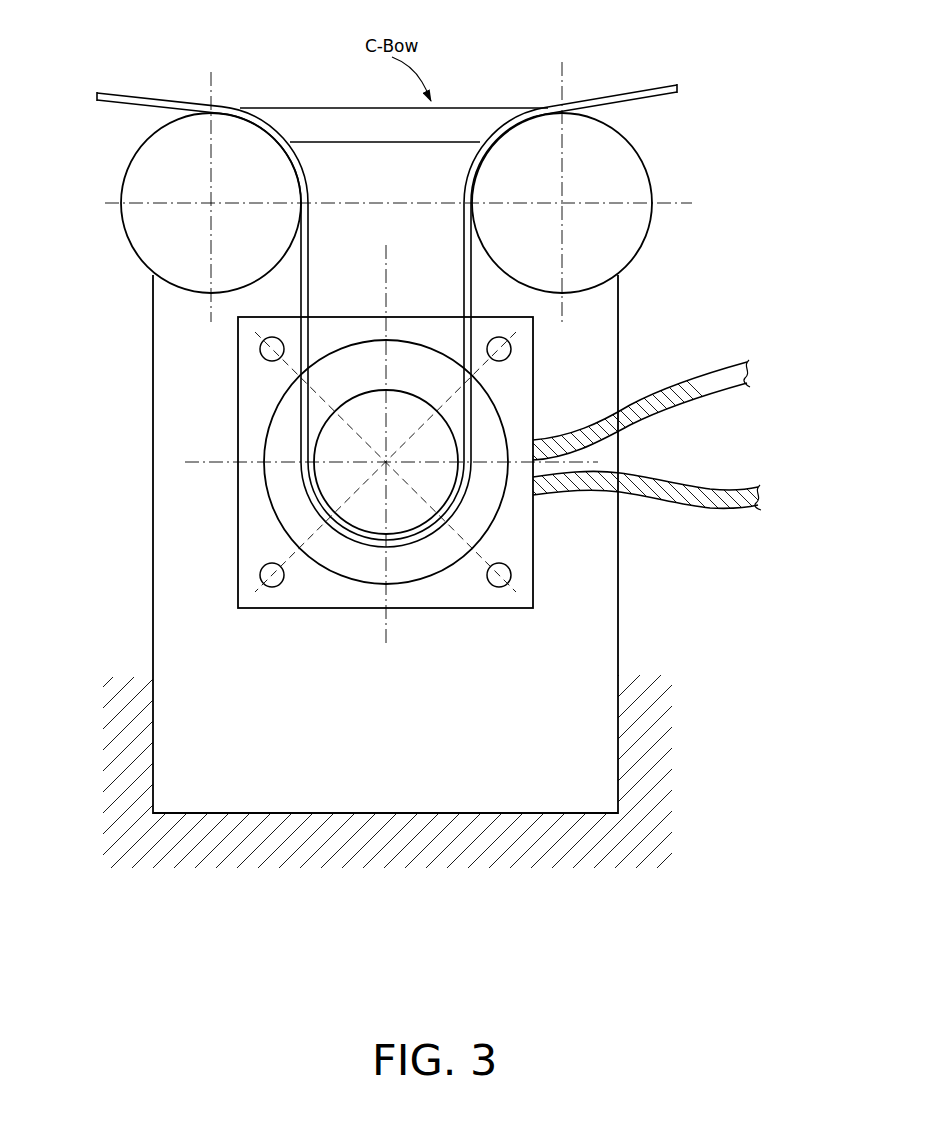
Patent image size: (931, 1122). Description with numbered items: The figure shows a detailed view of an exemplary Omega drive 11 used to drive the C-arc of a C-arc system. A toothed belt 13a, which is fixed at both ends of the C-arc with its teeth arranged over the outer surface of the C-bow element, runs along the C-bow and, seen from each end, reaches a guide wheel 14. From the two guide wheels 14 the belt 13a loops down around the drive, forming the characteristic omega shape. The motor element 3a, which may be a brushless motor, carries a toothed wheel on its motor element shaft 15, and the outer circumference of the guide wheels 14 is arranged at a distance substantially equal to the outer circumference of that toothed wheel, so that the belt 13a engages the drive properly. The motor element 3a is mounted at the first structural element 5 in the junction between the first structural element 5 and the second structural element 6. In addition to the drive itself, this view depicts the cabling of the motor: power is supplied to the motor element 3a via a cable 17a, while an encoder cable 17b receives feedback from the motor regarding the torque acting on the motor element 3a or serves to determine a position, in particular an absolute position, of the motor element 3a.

The first structural element 5 is at (590, 604).
The second structural element 6 is at (528, 67).
The guide wheel 14 is at (497, 185).
The toothed belt 13a is at (298, 293).
The motor element 3a is at (250, 370).
The motor element shaft 15 is at (348, 495).
The Omega drive 11 is at (789, 252).
The cable 17a is at (748, 378).
The encoder cable 17b is at (762, 497).